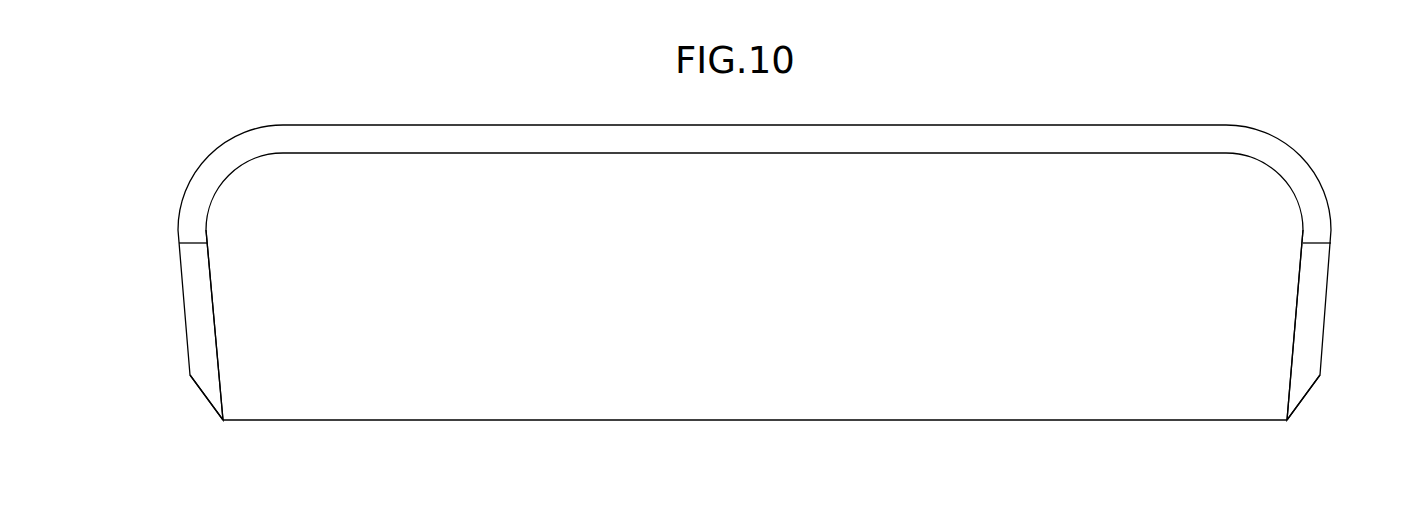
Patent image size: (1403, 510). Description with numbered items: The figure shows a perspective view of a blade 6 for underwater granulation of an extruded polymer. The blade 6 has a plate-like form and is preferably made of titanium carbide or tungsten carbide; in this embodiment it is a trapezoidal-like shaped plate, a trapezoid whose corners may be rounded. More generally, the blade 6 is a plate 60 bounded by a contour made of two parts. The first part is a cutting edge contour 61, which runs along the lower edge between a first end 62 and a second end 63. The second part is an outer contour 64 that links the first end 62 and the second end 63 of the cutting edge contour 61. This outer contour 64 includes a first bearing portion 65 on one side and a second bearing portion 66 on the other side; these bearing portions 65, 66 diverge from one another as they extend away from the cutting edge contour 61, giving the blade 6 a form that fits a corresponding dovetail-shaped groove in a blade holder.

The blade 6 is at (1312, 86).
The plate 60 is at (753, 271).
The cutting edge contour 61 is at (569, 424).
The first end 62 is at (219, 425).
The second end 63 is at (1291, 425).
The outer contour 64 is at (432, 121).
The first bearing portion 65 is at (205, 340).
The second bearing portion 66 is at (1312, 330).